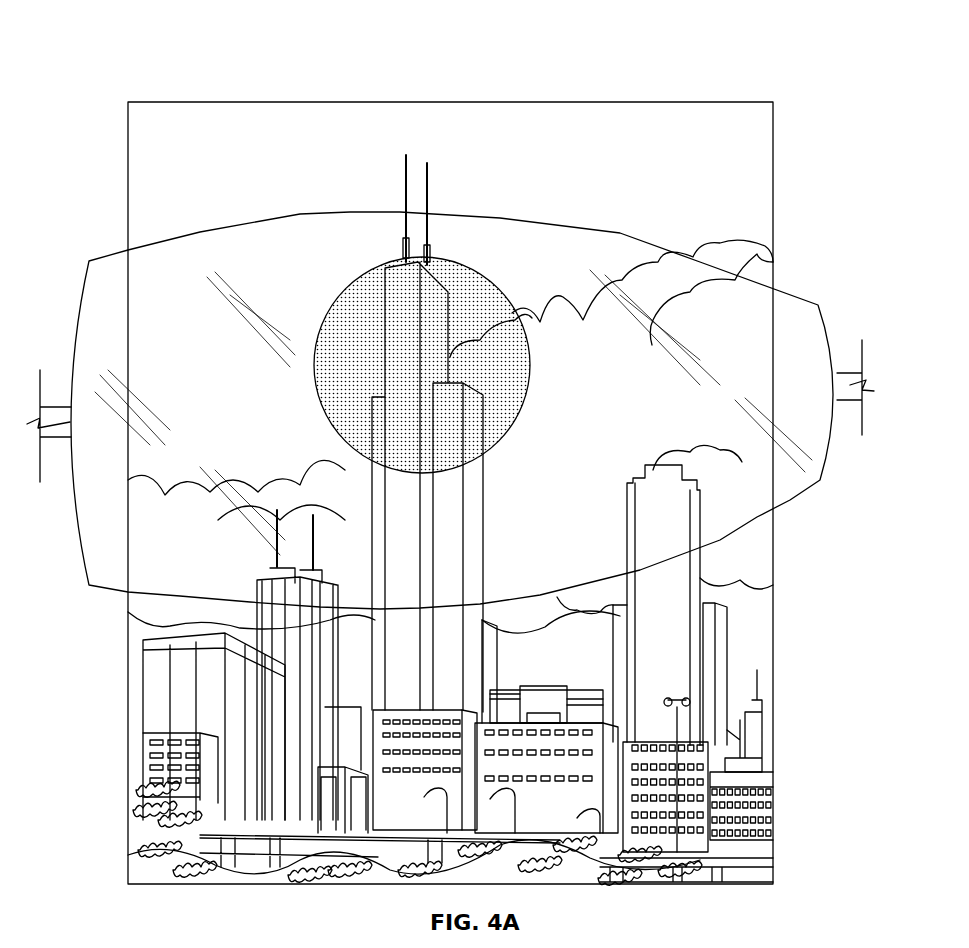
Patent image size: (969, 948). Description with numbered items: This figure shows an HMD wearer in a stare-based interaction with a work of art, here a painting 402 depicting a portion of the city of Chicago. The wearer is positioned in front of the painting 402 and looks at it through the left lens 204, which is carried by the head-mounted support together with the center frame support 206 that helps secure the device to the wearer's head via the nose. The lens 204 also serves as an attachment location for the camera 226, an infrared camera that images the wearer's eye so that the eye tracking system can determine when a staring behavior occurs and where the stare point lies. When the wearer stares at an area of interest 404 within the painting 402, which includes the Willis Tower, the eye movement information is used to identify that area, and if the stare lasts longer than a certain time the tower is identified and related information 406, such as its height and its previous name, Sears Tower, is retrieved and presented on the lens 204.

The left lens 204 is at (150, 508).
The center frame support 206 is at (55, 407).
The camera 226 is at (848, 373).
The painting 402 is at (775, 822).
The area of interest 404 is at (505, 293).
The related information 406 is at (690, 556).